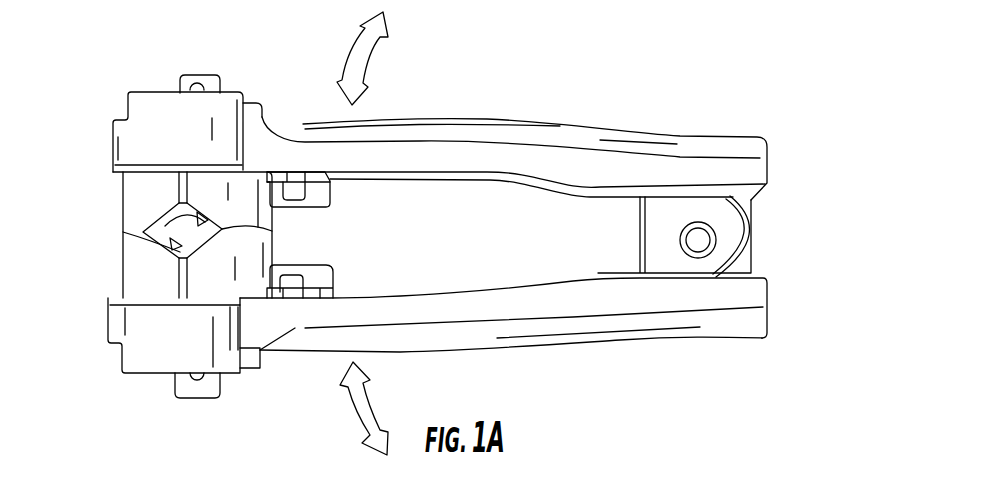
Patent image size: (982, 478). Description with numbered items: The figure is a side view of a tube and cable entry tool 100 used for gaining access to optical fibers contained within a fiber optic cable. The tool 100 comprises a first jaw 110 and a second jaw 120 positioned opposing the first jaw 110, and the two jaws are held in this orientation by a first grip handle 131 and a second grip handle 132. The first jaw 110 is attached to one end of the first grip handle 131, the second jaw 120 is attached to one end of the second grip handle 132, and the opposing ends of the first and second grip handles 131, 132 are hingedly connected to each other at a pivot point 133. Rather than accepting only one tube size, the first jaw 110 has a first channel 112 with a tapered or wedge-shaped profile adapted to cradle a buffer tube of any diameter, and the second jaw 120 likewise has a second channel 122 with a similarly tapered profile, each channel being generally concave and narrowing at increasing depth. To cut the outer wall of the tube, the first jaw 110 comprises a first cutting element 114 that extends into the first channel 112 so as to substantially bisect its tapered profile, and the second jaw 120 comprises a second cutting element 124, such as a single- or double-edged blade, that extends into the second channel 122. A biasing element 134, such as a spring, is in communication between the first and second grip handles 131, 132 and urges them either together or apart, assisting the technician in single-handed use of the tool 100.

The tube and cable entry tool 100 is at (630, 75).
The first jaw 110 is at (123, 196).
The first channel 112 is at (212, 228).
The first cutting element 114 is at (165, 226).
The second jaw 120 is at (118, 288).
The second channel 122 is at (148, 234).
The second cutting element 124 is at (272, 231).
The first grip handle 131 is at (562, 140).
The second grip handle 132 is at (528, 330).
The pivot point 133 is at (703, 240).
The biasing element 134 is at (748, 250).